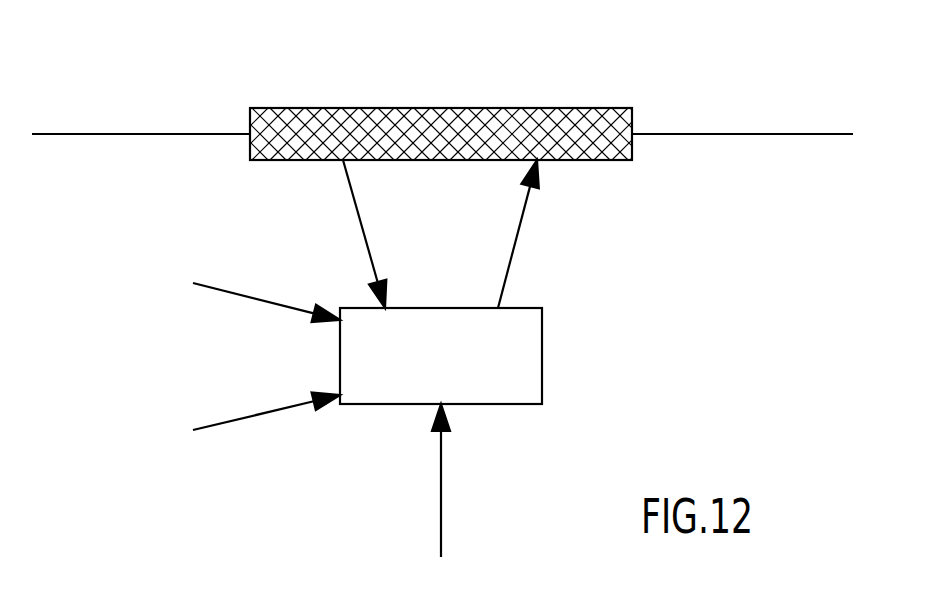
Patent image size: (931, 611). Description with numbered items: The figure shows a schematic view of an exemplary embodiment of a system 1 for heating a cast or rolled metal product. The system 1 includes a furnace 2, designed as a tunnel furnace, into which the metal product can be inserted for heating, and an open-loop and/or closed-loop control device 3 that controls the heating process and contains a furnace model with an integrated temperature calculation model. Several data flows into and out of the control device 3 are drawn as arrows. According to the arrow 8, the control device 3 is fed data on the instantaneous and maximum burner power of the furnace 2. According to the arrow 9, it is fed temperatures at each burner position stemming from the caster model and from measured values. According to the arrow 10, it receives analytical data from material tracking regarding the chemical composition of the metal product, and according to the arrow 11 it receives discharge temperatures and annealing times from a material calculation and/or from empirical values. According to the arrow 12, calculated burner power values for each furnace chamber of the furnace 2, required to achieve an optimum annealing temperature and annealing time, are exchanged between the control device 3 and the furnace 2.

The system 1 is at (645, 46).
The furnace 2 is at (372, 110).
The open-loop and/or closed-loop control device 3 is at (527, 373).
The arrow 8 is at (353, 223).
The arrow 9 is at (258, 303).
The arrow 10 is at (238, 417).
The arrow 11 is at (445, 482).
The arrow 12 is at (520, 247).